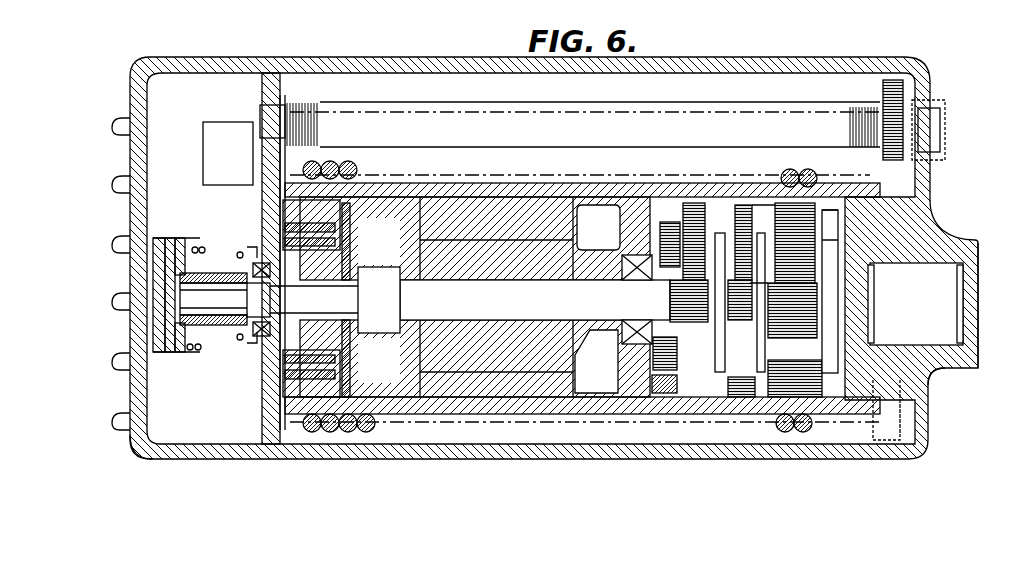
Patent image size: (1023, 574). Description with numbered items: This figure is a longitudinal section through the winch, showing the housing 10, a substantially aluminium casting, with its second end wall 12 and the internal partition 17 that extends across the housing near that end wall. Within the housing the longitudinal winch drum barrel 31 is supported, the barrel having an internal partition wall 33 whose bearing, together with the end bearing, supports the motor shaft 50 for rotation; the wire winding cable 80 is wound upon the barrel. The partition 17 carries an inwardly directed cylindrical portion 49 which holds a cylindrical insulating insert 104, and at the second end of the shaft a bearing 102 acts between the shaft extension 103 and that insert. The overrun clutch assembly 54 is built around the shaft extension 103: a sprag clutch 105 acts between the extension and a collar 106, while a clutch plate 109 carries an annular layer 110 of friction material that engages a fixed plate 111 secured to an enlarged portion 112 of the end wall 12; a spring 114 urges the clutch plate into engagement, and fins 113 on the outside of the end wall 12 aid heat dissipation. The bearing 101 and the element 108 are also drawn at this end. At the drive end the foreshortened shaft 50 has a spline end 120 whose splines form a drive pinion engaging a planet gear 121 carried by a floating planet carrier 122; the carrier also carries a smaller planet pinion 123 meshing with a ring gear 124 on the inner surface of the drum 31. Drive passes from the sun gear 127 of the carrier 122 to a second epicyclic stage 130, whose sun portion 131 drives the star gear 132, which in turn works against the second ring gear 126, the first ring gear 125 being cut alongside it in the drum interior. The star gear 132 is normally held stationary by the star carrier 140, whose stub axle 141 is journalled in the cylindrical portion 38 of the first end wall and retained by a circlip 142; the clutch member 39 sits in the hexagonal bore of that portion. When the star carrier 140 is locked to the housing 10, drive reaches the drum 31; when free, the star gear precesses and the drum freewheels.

The housing 10 is at (346, 453).
The second end wall 12 is at (135, 420).
The internal partition 17 is at (262, 432).
The winch drum barrel 31 is at (618, 396).
The internal partition wall 33 is at (625, 232).
The cylindrical bearing surface 38 is at (920, 383).
The clutch member 39 is at (968, 283).
The cylindrical portion 49 is at (348, 365).
The motor shaft 50 is at (446, 310).
The overrun clutch assembly 54 is at (203, 372).
The wire winding cable 80 is at (345, 160).
The bearing 101 is at (252, 348).
The bearing 102 is at (340, 248).
The shaft extension 103 is at (350, 262).
The insulating insert 104 is at (350, 345).
The sprag clutch 105 is at (195, 352).
The collar 106 is at (178, 262).
The electronics block 108 is at (212, 240).
The clutch plate 109 is at (195, 244).
The annular layer of friction material 110 is at (166, 240).
The fixed plate 111 is at (148, 358).
The enlarged portion 112 is at (165, 318).
The fins 113 is at (126, 190).
The spring 114 is at (235, 356).
The spline end 120 is at (670, 300).
The planet gear 121 is at (690, 203).
The floating planet carrier 122 is at (720, 372).
The smaller planet pinion 123 is at (658, 240).
The ring gear 124 is at (650, 368).
The first ring gear 125 is at (740, 397).
The second ring gear 126 is at (810, 397).
The sun gear 127 is at (762, 372).
The second epicyclic stage 130 is at (910, 402).
The sun portion 131 is at (835, 397).
The star gear 132 is at (770, 208).
The star carrier 140 is at (832, 222).
The stub axle 141 is at (950, 304).
The circlip 142 is at (872, 337).